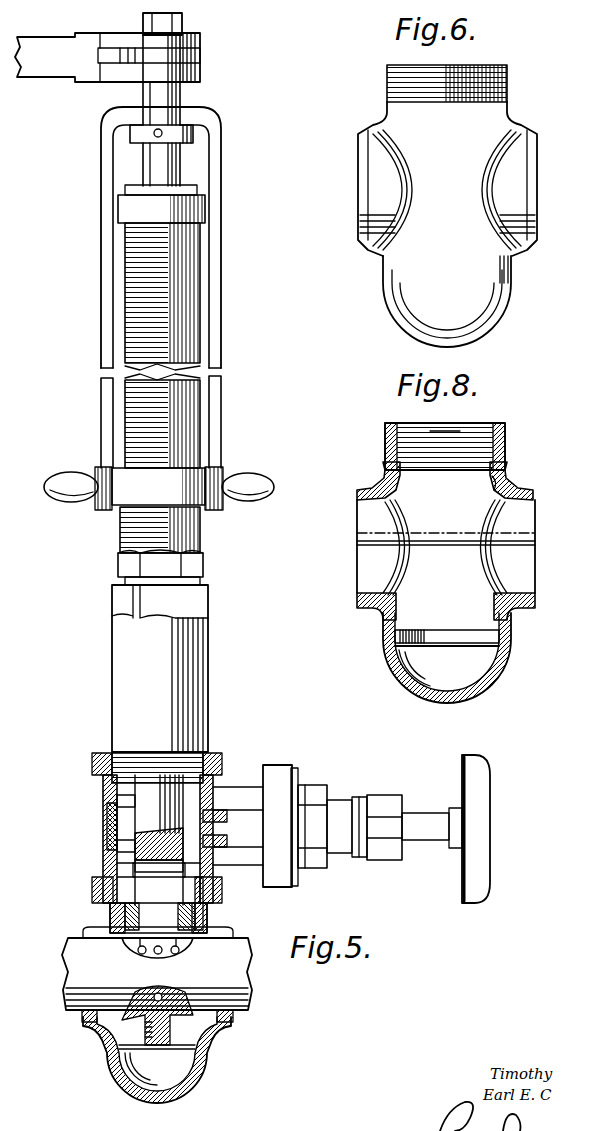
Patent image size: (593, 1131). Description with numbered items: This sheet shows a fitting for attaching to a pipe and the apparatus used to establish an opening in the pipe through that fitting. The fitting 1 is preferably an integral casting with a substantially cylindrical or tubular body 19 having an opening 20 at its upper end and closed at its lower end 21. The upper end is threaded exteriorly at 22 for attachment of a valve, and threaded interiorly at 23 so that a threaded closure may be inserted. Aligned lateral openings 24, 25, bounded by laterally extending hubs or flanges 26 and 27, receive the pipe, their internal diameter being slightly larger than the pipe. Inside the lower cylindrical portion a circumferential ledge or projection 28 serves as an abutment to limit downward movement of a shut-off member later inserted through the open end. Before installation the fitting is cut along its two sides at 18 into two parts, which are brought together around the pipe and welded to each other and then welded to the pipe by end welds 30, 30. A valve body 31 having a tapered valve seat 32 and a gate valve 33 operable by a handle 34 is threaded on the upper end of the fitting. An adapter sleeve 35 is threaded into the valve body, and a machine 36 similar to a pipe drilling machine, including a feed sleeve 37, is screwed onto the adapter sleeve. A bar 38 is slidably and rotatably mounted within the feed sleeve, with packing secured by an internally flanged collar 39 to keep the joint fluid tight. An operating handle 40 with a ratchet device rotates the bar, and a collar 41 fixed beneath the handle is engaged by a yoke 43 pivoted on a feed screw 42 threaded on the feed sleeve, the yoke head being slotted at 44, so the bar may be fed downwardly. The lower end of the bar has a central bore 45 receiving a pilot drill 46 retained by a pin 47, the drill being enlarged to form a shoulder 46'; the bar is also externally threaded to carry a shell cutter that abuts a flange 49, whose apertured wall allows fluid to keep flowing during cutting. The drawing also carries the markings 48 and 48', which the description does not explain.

In FIG. 6, the fitting 1 is at (390, 272).
In FIG. 8, the fitting 1 is at (383, 626).
In FIG. 8, the cutting line 18 is at (492, 553).
In FIG. 6, the tubular body 19 is at (447, 190).
In FIG. 8, the tubular body 19 is at (445, 547).
In FIG. 8, the opening 20 is at (510, 477).
In FIG. 6, the lower end 21 is at (493, 324).
In FIG. 8, the lower end 21 is at (497, 679).
In FIG. 8, the exterior threads 22 is at (506, 442).
In FIG. 8, the interior threads 23 is at (440, 432).
In FIG. 8, the lateral opening 24 is at (368, 511).
In FIG. 8, the lateral opening 25 is at (518, 511).
In FIG. 8, the hub 26 is at (372, 480).
In FIG. 8, the hub 27 is at (520, 480).
In FIG. 8, the circumferential ledge 28 is at (400, 631).
In FIG. 5, the end weld 30 is at (83, 1023).
In FIG. 5, the valve body 31 is at (104, 801).
In FIG. 5, the tapered valve seat 32 is at (120, 818).
In FIG. 5, the gate valve 33 is at (226, 813).
In FIG. 5, the handle 34 is at (487, 894).
In FIG. 5, the adapter sleeve 35 is at (197, 669).
In FIG. 5, the machine 36 is at (203, 321).
In FIG. 5, the feed sleeve 37 is at (122, 541).
In FIG. 5, the bar 38 is at (155, 792).
In FIG. 5, the internally flanged collar 39 is at (124, 206).
In FIG. 5, the operating handle 40 is at (50, 43).
In FIG. 5, the collar 41 is at (130, 143).
In FIG. 5, the feed screw 42 is at (250, 479).
In FIG. 5, the yoke 43 is at (213, 257).
In FIG. 5, the slot 44 is at (183, 112).
In FIG. 5, the central bore 45 is at (222, 901).
In FIG. 5, the pilot drill 46 is at (143, 917).
In FIG. 5, the shoulder 46' is at (150, 1046).
In FIG. 5, the pin 47 is at (190, 877).
In FIG. 5, the packing ring 48 is at (186, 914).
In FIG. 5, the perforated saddle 48' is at (165, 962).
In FIG. 5, the flange 49 is at (95, 886).